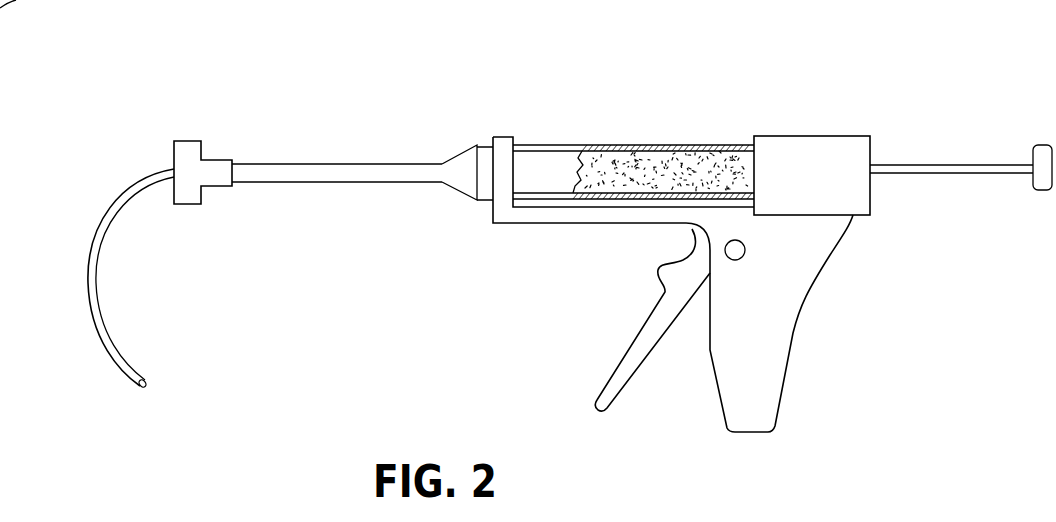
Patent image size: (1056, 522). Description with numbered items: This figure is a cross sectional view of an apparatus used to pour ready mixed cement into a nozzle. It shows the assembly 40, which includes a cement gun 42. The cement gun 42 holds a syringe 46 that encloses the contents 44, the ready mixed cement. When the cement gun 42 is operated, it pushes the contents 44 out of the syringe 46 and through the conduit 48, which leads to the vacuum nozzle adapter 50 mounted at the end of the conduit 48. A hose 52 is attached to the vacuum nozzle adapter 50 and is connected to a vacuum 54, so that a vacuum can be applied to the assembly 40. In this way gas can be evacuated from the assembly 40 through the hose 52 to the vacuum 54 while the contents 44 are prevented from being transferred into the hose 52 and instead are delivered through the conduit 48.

The assembly 40 is at (617, 105).
The cement gun 42 is at (805, 150).
The contents 44 is at (672, 156).
The syringe 46 is at (537, 145).
The conduit 48 is at (296, 167).
The vacuum nozzle adapter 50 is at (187, 148).
The hose 52 is at (97, 268).
The vacuum 54 is at (147, 388).